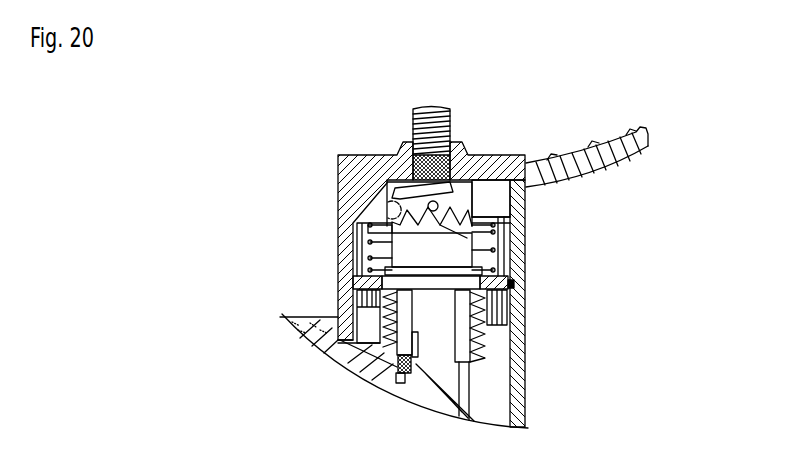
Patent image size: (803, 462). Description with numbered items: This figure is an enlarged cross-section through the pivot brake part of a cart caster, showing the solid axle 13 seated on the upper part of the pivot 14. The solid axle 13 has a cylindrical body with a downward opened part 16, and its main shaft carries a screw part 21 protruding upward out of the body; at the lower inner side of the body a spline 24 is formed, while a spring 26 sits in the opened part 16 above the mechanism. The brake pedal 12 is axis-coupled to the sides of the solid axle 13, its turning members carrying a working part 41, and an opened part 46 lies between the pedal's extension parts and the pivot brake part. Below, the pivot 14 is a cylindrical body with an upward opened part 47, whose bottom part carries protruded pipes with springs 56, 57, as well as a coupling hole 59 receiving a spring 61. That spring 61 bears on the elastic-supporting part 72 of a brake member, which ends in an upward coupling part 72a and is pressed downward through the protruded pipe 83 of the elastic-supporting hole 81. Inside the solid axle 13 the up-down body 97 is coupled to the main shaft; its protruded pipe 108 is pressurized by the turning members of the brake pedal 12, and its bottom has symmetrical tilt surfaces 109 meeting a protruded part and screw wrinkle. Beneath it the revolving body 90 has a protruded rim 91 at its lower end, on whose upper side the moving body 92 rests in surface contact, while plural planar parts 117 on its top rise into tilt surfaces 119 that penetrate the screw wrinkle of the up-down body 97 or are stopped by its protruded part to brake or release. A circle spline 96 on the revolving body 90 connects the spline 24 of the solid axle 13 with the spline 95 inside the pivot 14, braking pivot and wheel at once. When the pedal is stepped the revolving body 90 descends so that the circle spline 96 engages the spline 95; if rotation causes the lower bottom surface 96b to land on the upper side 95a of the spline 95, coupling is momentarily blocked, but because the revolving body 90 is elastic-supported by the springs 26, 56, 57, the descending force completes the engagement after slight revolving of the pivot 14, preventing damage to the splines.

The brake pedal 12 is at (640, 140).
The solid axle 13 is at (360, 182).
The pivot 14 is at (520, 403).
The opened part 16 is at (500, 203).
The screw part 21 is at (428, 140).
The spline 24 is at (520, 238).
The spring 26 is at (372, 240).
The working part 41 is at (495, 158).
The opened part 46 is at (530, 168).
The opened part 47 is at (500, 375).
The spring 56 is at (357, 320).
The spring 57 is at (485, 322).
The coupling hole 59 is at (412, 368).
The spring 61 is at (398, 376).
The elastic-supporting part 72 is at (374, 380).
The coupling part 72a is at (403, 382).
The elastic-supporting hole 81 is at (517, 278).
The protruded pipe 83 is at (403, 313).
The revolving body 90 is at (373, 243).
The protruded rim 91 is at (407, 270).
The moving body 92 is at (523, 250).
The spline 95 is at (352, 297).
The upper side 95a is at (516, 283).
The circle spline 96 is at (518, 267).
The lower bottom surface 96b is at (349, 284).
The up-down body 97 is at (408, 185).
The protruded pipe 108 is at (439, 205).
The tilt surface 109 is at (372, 207).
The planar part 117 is at (385, 218).
The tilt surface 119 is at (512, 218).